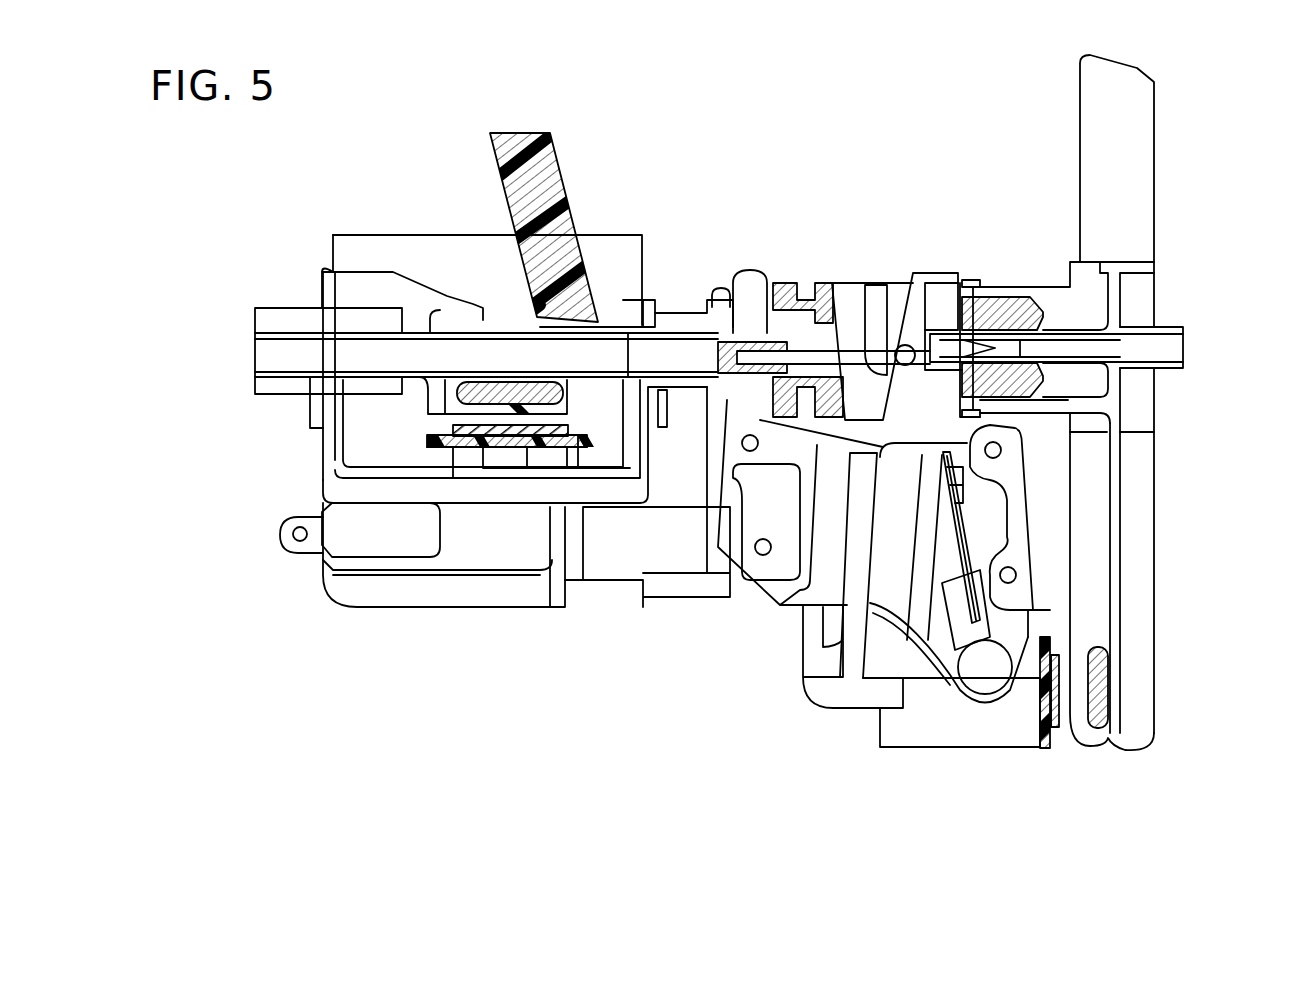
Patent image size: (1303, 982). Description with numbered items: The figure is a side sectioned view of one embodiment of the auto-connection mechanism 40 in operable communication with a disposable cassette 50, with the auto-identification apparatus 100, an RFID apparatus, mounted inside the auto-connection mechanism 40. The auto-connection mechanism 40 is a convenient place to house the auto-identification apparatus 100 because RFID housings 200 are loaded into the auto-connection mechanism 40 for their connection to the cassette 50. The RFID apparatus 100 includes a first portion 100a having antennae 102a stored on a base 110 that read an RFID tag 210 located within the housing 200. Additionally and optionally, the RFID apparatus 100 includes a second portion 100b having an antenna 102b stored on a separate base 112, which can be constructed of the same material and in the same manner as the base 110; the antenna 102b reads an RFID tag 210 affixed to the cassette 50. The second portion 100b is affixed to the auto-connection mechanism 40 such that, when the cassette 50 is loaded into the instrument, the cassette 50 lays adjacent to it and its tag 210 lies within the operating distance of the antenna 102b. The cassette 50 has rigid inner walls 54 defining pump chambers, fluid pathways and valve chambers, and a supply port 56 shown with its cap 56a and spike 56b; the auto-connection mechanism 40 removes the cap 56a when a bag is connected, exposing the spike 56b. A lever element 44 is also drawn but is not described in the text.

The auto-connection mechanism 40 is at (331, 232).
The RFID housing 200 is at (568, 172).
The RFID tag 210 is at (445, 392).
The antennae 102a is at (565, 427).
The first portion of RFID apparatus 100a is at (428, 440).
The base 110 is at (525, 440).
The lever assembly 44 is at (838, 280).
The cap 56a is at (965, 282).
The spike 56b is at (1072, 336).
The supply port 56 is at (1034, 418).
The cassette 50 is at (1160, 122).
The rigid inner walls 54 is at (1110, 503).
The separate base 112 is at (1045, 633).
The second portion of RFID apparatus 100b is at (1045, 750).
The antenna 102b is at (1057, 730).
The auto-identification apparatus 100 is at (357, 702).